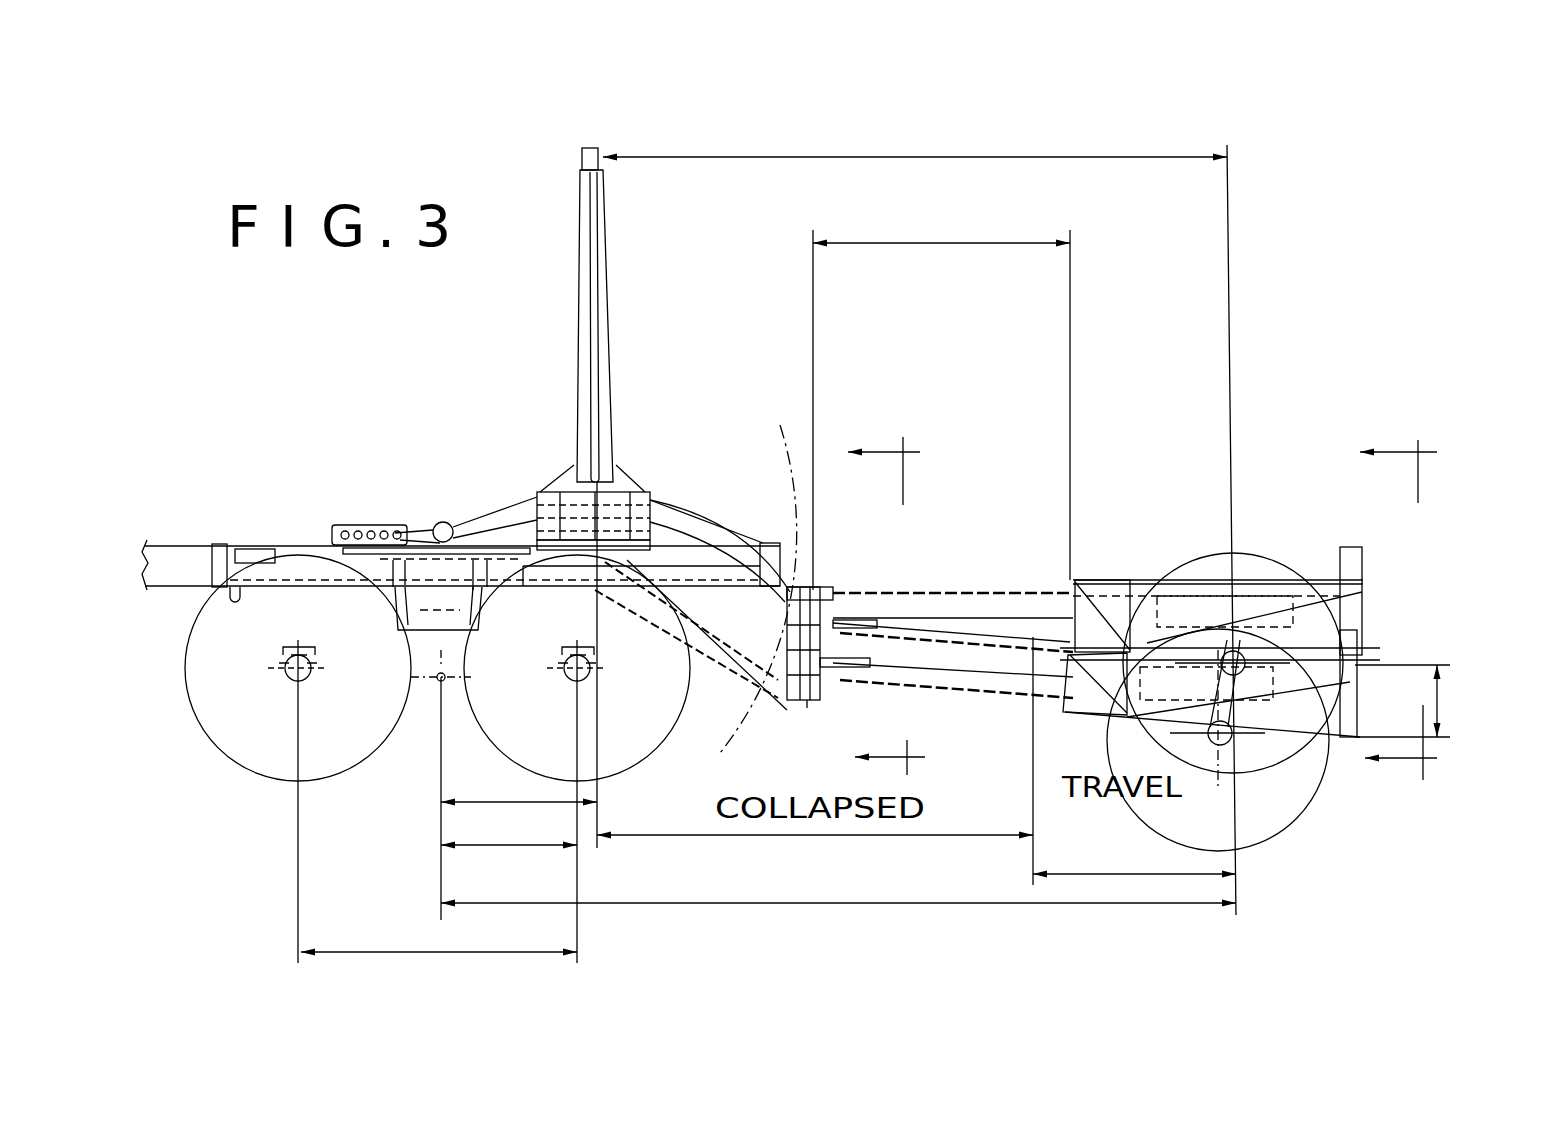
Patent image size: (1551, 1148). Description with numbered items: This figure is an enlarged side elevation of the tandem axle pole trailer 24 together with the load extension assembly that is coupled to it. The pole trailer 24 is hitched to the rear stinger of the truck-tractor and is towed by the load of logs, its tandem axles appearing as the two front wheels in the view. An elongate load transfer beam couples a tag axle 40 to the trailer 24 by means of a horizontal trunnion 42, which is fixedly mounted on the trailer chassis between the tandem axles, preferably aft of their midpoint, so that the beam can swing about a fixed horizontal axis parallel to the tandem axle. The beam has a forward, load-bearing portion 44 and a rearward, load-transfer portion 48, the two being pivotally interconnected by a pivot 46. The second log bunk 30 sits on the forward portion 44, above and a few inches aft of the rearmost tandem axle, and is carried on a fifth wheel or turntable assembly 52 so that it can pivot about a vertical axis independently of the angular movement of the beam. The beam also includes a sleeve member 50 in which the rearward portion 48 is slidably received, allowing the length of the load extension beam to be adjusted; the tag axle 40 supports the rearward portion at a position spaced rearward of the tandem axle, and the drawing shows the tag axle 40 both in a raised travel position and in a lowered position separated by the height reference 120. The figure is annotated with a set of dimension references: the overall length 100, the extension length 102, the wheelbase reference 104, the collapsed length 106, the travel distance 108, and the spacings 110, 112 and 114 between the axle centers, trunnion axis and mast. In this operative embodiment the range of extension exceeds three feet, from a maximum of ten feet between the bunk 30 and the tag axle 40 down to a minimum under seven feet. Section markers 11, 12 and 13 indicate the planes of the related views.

The pole trailer 24 is at (188, 543).
The second log bunk 30 is at (572, 333).
The tag axle 40 is at (1287, 580).
The trunnion 42 is at (436, 522).
The forward load-bearing portion 44 is at (722, 520).
The pivot 46 is at (832, 580).
The rearward load-transfer portion 48 is at (965, 590).
The sleeve member 50 is at (1100, 578).
The fifth wheel or turntable assembly 52 is at (640, 487).
The overall length dimension 100 is at (936, 154).
The arm extension dimension 102 is at (973, 242).
The wheelbase dimension 104 is at (858, 903).
The collapsed length dimension 106 is at (845, 835).
The travel distance dimension 108 is at (1080, 874).
The front axle spacing dimension 110 is at (378, 952).
The pivot offset dimension 112 is at (515, 845).
The mast offset dimension 114 is at (525, 802).
The wheel drop dimension 120 is at (1440, 698).
The section line FIG. 11 is at (935, 457).
The section line FIG. 12 is at (937, 767).
The section line FIG. 13 is at (1413, 600).